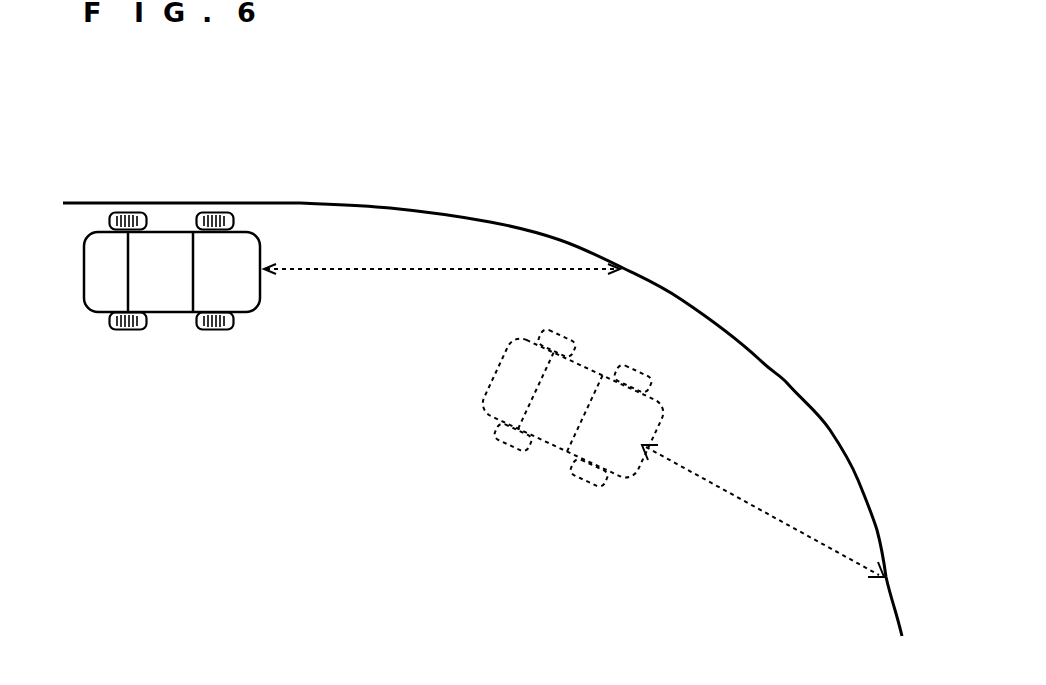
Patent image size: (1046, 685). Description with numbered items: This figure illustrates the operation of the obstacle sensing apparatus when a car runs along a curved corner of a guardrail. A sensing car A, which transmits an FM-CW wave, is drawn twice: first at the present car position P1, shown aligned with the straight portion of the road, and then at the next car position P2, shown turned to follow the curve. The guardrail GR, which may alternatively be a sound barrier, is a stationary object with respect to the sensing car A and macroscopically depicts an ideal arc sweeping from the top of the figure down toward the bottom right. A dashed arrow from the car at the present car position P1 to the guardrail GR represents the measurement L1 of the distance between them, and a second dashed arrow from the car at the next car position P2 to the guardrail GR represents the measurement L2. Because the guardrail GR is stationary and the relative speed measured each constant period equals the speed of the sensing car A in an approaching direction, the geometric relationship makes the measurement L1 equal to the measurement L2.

The sensing car A is at (360, 366).
The guardrail GR is at (683, 299).
The present car position P1 is at (52, 262).
The next car position P2 is at (485, 341).
The measurement L1 is at (442, 282).
The measurement L2 is at (738, 511).